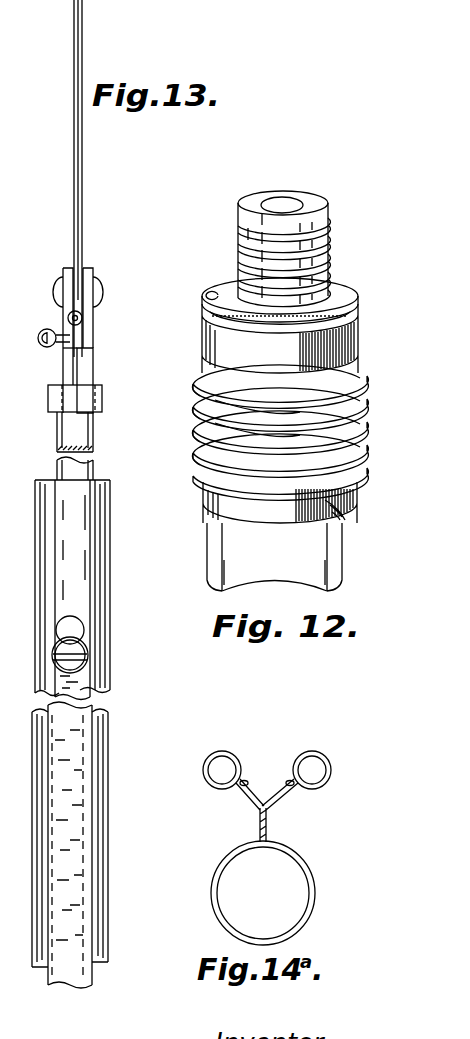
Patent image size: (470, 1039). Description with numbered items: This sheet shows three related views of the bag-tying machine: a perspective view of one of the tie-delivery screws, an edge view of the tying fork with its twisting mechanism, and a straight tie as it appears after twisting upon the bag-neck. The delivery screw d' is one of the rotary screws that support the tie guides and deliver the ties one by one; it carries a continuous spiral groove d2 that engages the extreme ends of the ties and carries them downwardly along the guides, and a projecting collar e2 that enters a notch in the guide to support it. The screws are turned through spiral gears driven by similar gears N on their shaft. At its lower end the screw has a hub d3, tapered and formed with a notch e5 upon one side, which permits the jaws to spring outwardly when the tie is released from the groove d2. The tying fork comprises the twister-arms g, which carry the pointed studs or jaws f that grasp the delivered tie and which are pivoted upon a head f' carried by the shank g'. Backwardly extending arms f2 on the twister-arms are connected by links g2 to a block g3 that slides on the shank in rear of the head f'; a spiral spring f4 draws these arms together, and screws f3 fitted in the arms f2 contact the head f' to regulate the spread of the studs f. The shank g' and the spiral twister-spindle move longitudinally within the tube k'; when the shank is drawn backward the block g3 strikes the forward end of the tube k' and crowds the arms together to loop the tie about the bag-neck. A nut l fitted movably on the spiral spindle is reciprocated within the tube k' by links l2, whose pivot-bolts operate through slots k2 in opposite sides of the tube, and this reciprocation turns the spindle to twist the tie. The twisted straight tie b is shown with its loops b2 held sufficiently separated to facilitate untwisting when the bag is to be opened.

In FIG. 13, the twister-arms g is at (74, 178).
In FIG. 13, the studs f is at (109, 9).
In FIG. 13, the head f' is at (87, 300).
In FIG. 13, the backwardly extending arms f2 is at (94, 360).
In FIG. 13, the screws f3 is at (82, 318).
In FIG. 13, the spiral spring f4 is at (44, 330).
In FIG. 13, the shank g' is at (96, 446).
In FIG. 13, the links g2 is at (64, 375).
In FIG. 13, the block g3 is at (102, 398).
In FIG. 13, the tube k' is at (90, 590).
In FIG. 13, the slots k2 is at (84, 624).
In FIG. 13, the nut l is at (72, 667).
In FIG. 13, the links l2 is at (48, 752).
In FIG. 12, the spiral gears N is at (330, 252).
In FIG. 12, the delivery screw d' is at (301, 307).
In FIG. 12, the spiral groove d2 is at (358, 353).
In FIG. 12, the hub d3 is at (343, 537).
In FIG. 12, the projecting collars e2 is at (364, 382).
In FIG. 12, the notch e5 is at (274, 567).
In FIG. 14A, the ring b is at (315, 886).
In FIG. 14A, the loops b2 is at (332, 770).